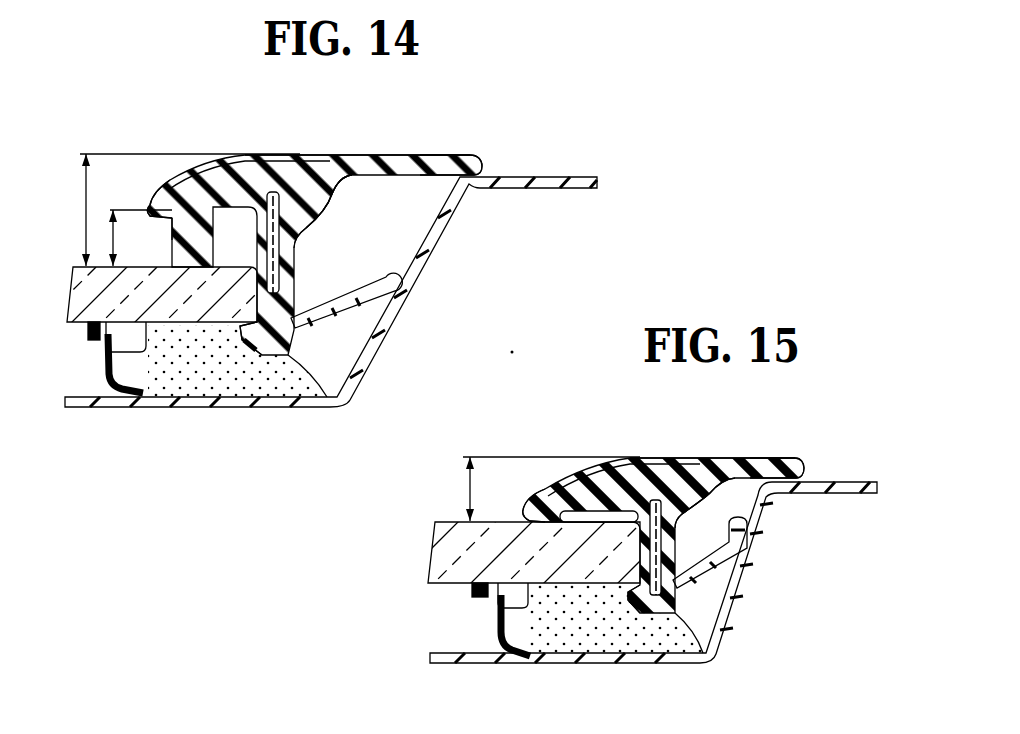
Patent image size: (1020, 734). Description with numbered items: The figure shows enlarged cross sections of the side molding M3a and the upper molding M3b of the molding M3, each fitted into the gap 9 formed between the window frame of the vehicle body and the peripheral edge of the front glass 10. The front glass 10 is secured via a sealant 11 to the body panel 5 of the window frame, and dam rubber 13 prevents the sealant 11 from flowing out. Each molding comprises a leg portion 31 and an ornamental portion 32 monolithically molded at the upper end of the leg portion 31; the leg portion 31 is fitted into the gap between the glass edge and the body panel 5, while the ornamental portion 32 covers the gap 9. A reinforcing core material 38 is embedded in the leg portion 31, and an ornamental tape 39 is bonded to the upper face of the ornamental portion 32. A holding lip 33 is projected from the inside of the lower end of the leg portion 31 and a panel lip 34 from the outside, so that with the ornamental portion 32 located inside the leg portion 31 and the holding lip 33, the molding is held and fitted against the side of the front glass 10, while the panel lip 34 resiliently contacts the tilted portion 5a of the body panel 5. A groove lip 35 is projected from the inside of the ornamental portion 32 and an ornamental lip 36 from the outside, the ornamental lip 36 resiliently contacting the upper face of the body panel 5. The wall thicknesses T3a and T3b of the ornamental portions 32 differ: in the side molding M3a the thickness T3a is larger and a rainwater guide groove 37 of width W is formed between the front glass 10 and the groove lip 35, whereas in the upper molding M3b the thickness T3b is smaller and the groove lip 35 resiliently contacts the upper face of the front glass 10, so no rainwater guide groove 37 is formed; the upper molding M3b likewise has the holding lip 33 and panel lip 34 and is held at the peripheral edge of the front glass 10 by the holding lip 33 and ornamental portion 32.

In FIG. 14, the body panel 5 is at (538, 178).
In FIG. 15, the body panel 5 is at (840, 490).
In FIG. 14, the tilted portion 5a is at (406, 284).
In FIG. 15, the tilted portion 5a is at (760, 520).
In FIG. 14, the gap 9 is at (377, 248).
In FIG. 15, the gap 9 is at (752, 572).
In FIG. 14, the front glass 10 is at (78, 300).
In FIG. 15, the front glass 10 is at (458, 585).
In FIG. 14, the sealant 11 is at (198, 374).
In FIG. 15, the sealant 11 is at (658, 643).
In FIG. 14, the dam rubber 13 is at (110, 382).
In FIG. 15, the dam rubber 13 is at (507, 648).
In FIG. 14, the leg portion 31 is at (280, 281).
In FIG. 15, the leg portion 31 is at (661, 592).
In FIG. 14, the ornamental portion 32 is at (258, 178).
In FIG. 15, the ornamental portion 32 is at (633, 495).
In FIG. 14, the holding lip 33 is at (250, 401).
In FIG. 15, the holding lip 33 is at (623, 594).
In FIG. 14, the panel lip 34 is at (352, 316).
In FIG. 15, the panel lip 34 is at (736, 612).
In FIG. 14, the groove lip 35 is at (156, 203).
In FIG. 15, the groove lip 35 is at (547, 500).
In FIG. 14, the ornamental lip 36 is at (445, 168).
In FIG. 15, the ornamental lip 36 is at (768, 470).
In FIG. 14, the rainwater guide groove 37 is at (172, 220).
In FIG. 14, the reinforcing core material 38 is at (280, 241).
In FIG. 15, the reinforcing core material 38 is at (662, 538).
In FIG. 14, the ornamental tape 39 is at (208, 163).
In FIG. 15, the ornamental tape 39 is at (668, 457).
In FIG. 14, the molding M3 is at (152, 129).
In FIG. 15, the molding M3 is at (593, 424).
In FIG. 14, the side molding M3a is at (320, 138).
In FIG. 15, the upper molding M3b is at (773, 427).
In FIG. 14, the wall thickness T3a is at (176, 210).
In FIG. 15, the wall thickness T3b is at (538, 489).
In FIG. 14, the width W is at (134, 238).